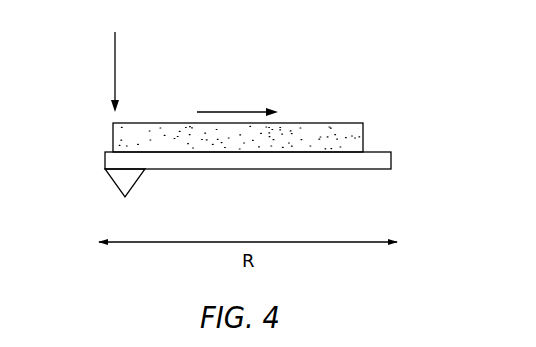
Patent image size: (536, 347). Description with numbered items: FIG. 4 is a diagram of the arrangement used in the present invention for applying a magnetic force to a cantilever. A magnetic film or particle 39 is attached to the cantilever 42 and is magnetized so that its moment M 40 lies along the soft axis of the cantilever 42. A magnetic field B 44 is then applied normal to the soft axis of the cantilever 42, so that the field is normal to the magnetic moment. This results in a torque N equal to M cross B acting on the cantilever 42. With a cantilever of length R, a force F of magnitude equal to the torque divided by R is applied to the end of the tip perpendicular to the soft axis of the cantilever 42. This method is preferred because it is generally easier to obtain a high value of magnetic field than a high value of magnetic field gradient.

The film or particle 39 is at (365, 140).
The moment M 40 is at (228, 112).
The cantilever 42 is at (250, 170).
The magnetic field B 44 is at (115, 80).